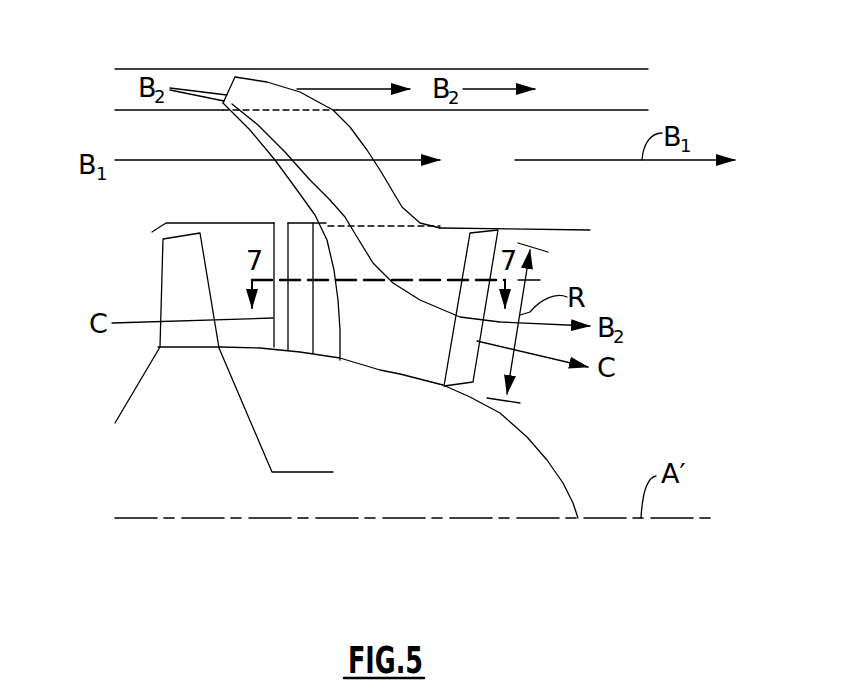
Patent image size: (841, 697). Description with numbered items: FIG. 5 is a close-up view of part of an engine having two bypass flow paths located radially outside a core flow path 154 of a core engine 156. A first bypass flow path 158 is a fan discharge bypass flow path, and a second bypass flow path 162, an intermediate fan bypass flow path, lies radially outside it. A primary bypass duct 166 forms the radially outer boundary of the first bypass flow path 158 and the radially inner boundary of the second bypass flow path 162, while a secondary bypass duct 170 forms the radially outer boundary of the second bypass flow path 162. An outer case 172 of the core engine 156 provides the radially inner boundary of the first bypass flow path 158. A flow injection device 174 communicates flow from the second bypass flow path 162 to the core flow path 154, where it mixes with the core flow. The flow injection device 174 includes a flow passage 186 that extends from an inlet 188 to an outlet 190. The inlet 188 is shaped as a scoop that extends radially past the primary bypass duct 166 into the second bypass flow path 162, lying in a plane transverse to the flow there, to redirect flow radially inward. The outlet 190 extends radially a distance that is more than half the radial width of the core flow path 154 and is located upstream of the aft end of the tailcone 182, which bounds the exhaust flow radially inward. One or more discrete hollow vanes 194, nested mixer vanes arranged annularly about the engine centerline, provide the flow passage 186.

The core flow path 154 is at (145, 267).
The core engine 156 is at (237, 223).
The first bypass flow path 158 is at (127, 147).
The second bypass flow path 162 is at (119, 89).
The primary bypass duct 166 is at (407, 110).
The secondary bypass duct 170 is at (512, 69).
The outer case 172 is at (443, 230).
The flow injection device 174 is at (403, 210).
The tailcone 182 is at (565, 468).
The flow passage 186 is at (342, 200).
The inlet 188 is at (227, 82).
The outlet 190 is at (467, 362).
The hollow vanes 194 is at (273, 242).